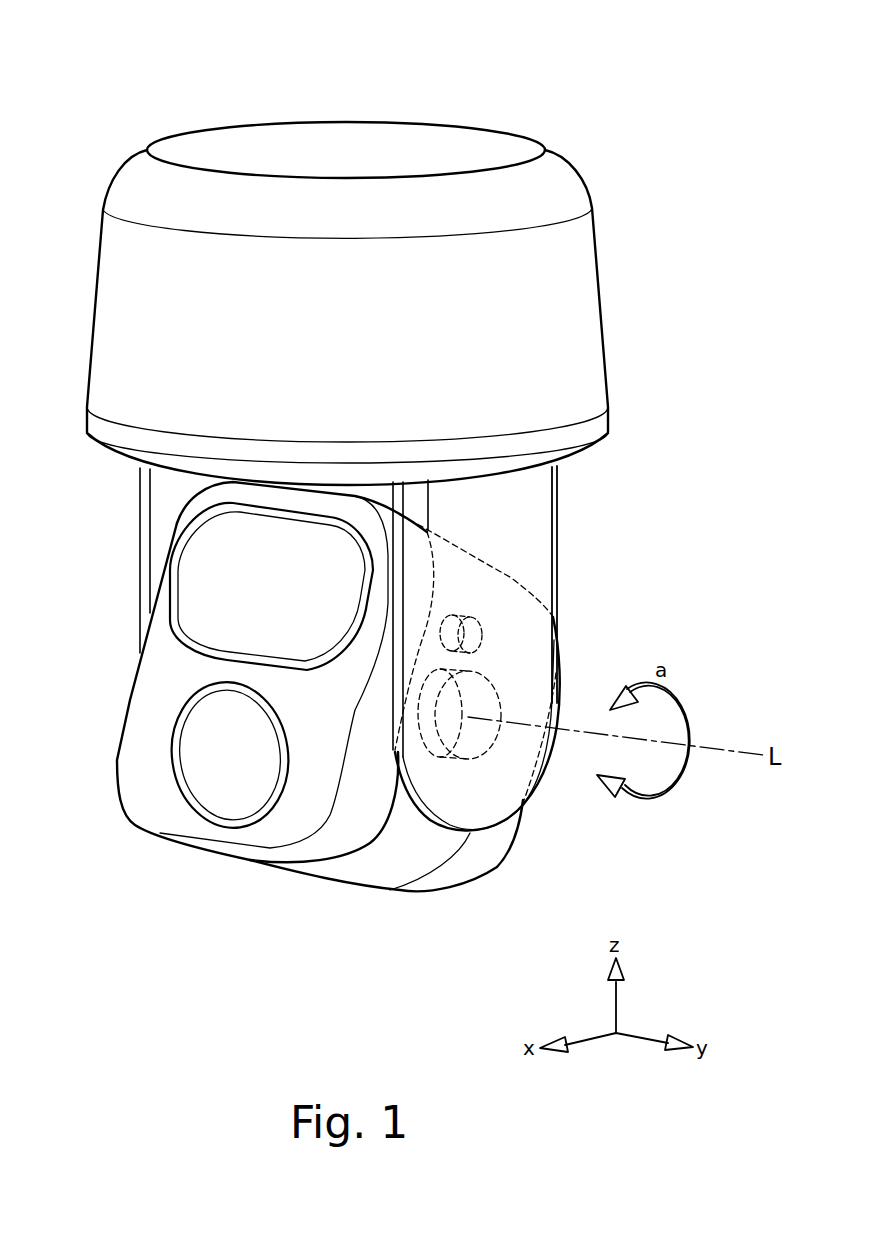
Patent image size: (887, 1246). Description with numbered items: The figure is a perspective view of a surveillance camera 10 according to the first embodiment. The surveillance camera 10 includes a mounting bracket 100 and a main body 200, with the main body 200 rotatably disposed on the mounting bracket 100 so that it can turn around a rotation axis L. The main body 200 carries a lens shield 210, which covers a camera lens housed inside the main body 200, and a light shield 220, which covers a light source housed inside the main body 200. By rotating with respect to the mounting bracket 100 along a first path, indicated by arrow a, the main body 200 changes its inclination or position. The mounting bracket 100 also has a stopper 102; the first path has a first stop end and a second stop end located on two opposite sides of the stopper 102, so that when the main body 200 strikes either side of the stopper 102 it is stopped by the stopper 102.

The surveillance camera 10 is at (85, 60).
The mounting bracket 100 is at (626, 214).
The stopper 102 is at (470, 635).
The main body 200 is at (340, 729).
The lens shield 210 is at (227, 750).
The light shield 220 is at (240, 585).